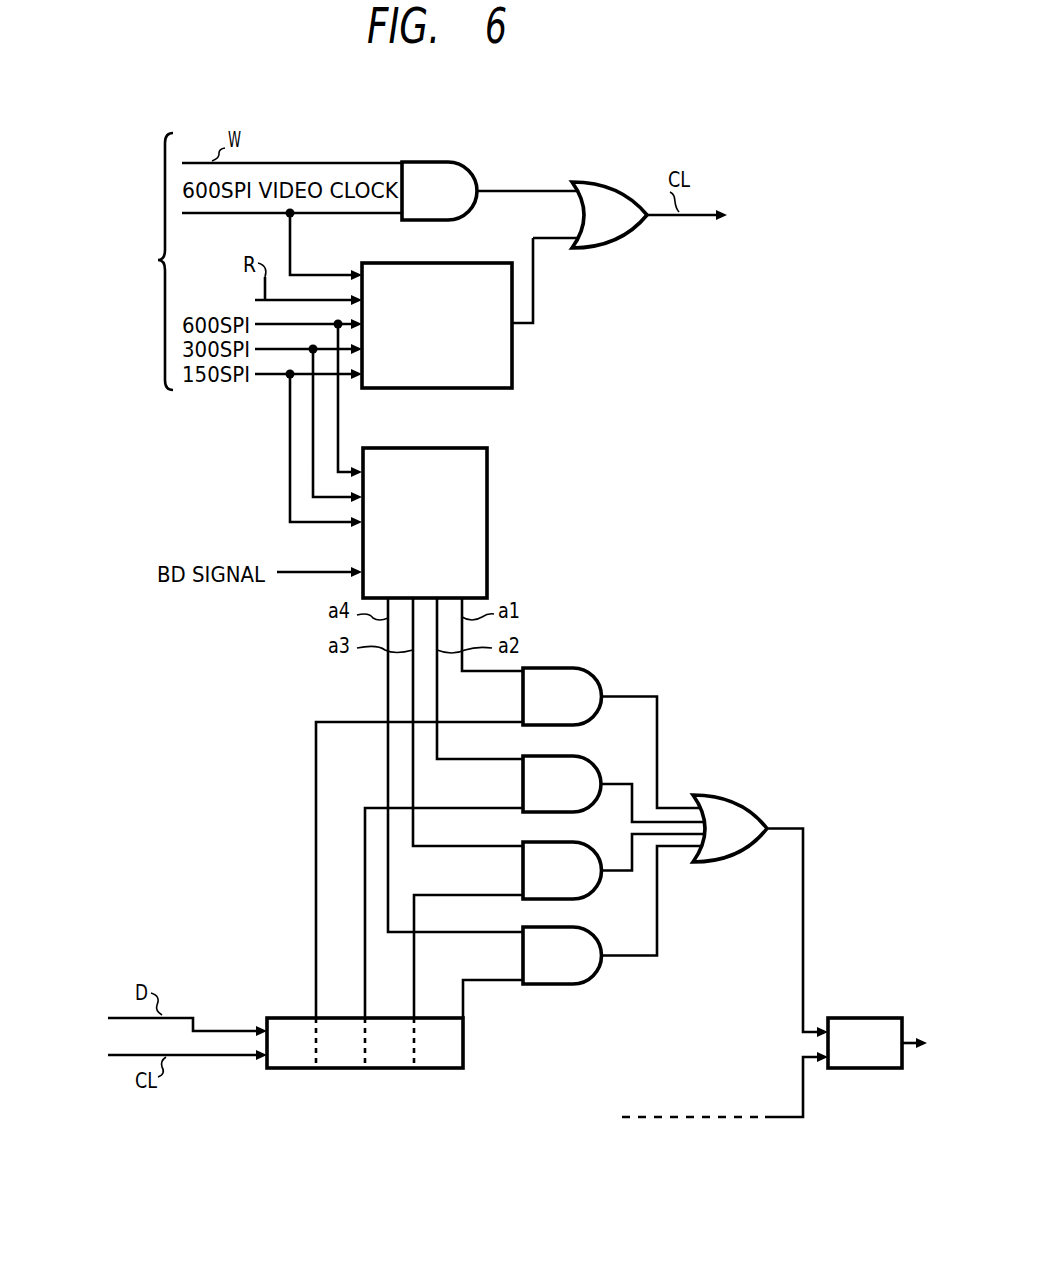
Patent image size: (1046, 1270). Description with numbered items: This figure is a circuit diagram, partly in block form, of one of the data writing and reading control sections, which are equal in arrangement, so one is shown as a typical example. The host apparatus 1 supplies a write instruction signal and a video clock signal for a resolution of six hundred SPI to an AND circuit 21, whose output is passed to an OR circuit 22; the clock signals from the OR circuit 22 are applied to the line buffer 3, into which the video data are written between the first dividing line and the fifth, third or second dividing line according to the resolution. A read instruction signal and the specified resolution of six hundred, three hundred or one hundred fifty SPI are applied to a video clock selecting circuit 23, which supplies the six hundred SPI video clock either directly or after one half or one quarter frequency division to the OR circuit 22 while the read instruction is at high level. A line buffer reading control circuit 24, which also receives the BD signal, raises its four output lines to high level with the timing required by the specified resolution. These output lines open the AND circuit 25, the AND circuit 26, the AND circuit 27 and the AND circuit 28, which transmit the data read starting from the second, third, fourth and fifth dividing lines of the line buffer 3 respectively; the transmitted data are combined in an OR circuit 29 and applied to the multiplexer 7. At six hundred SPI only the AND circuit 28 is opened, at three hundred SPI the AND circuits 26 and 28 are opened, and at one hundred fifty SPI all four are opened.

The host apparatus 1 is at (104, 261).
The AND circuit 21 is at (410, 161).
The OR circuit 22 is at (603, 183).
The video clock selecting circuit 23 is at (468, 263).
The line buffer reading control circuit 24 is at (437, 447).
The AND circuit 25 is at (578, 670).
The AND circuit 26 is at (578, 758).
The AND circuit 27 is at (578, 844).
The AND circuit 28 is at (578, 929).
The OR circuit 29 is at (737, 800).
The line buffer 3 is at (290, 1015).
The multiplexer 7 is at (868, 1018).